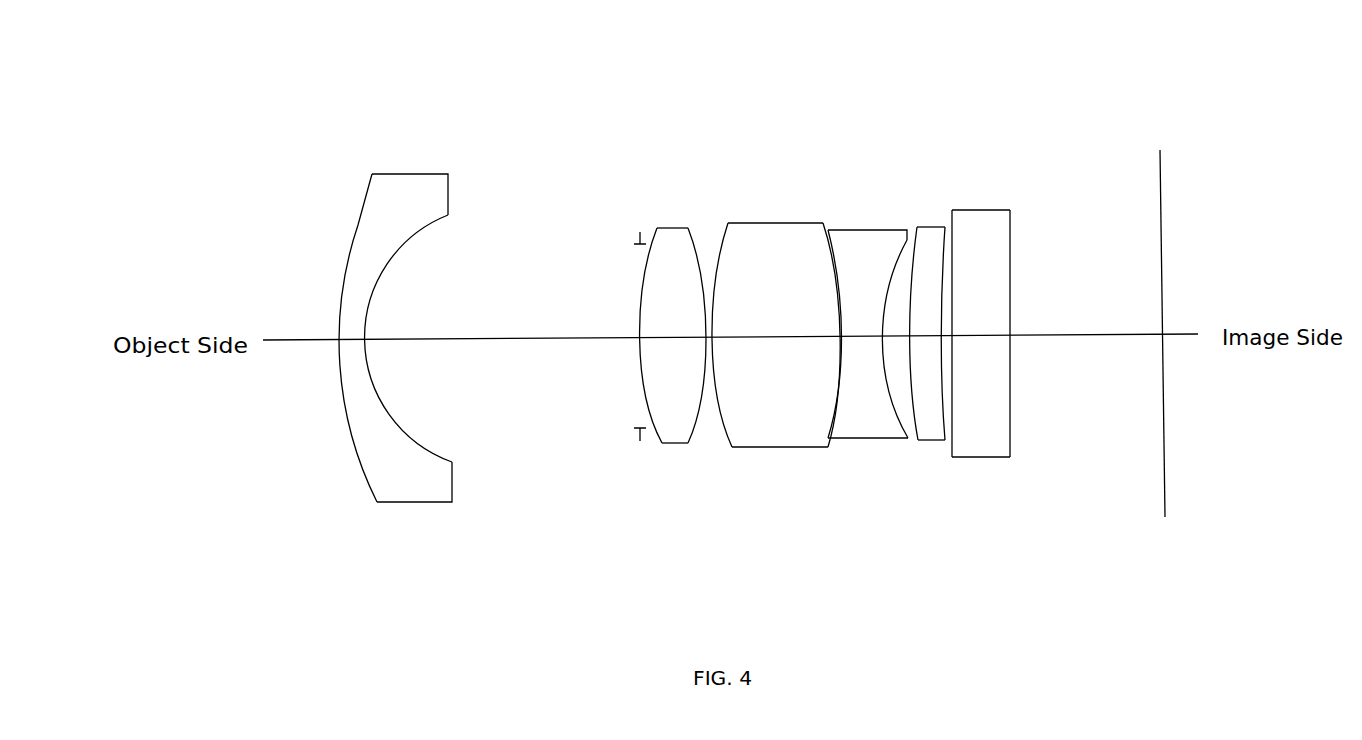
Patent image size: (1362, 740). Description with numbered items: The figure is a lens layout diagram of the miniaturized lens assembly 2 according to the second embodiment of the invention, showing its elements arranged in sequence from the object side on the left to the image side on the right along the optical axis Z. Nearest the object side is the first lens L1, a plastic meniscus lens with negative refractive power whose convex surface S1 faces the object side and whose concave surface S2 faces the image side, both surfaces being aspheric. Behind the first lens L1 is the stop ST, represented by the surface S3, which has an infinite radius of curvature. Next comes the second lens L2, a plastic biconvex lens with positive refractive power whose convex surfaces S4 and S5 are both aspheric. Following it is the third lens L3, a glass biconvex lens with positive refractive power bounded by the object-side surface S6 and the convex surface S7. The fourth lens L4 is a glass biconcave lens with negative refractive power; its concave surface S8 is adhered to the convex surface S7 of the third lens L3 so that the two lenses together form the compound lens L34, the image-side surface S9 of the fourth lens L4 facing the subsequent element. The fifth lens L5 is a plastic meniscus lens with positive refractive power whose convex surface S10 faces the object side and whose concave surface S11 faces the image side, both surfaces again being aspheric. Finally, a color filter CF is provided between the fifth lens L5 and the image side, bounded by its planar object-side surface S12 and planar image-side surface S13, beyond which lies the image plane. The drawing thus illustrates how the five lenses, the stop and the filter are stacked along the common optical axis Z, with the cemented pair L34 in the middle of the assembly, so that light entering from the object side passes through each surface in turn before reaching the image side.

The miniaturized lens assembly 2 is at (263, 102).
The optical axis Z is at (300, 340).
The first lens L1 is at (412, 506).
The second lens L2 is at (673, 443).
The third lens L3 is at (775, 448).
The fourth lens L4 is at (853, 440).
The compound lens L34 is at (880, 576).
The fifth lens L5 is at (935, 442).
The color filter CF is at (997, 458).
The convex surface of the first lens S1 is at (363, 222).
The concave surface of the first lens S2 is at (444, 214).
The stop surface S3 is at (640, 230).
The convex surface of the second lens S4 is at (657, 228).
The convex surface of the second lens S5 is at (689, 228).
The object-side surface of the third lens S6 is at (727, 223).
The convex surface of the third lens S7 is at (826, 238).
The concave surface of the fourth lens S8 is at (829, 230).
The image-side surface of the fourth lens S9 is at (901, 237).
The convex surface of the fifth lens S10 is at (916, 228).
The concave surface of the fifth lens S11 is at (939, 227).
The object-side surface of the color filter S12 is at (952, 210).
The image-side surface of the color filter S13 is at (1008, 210).